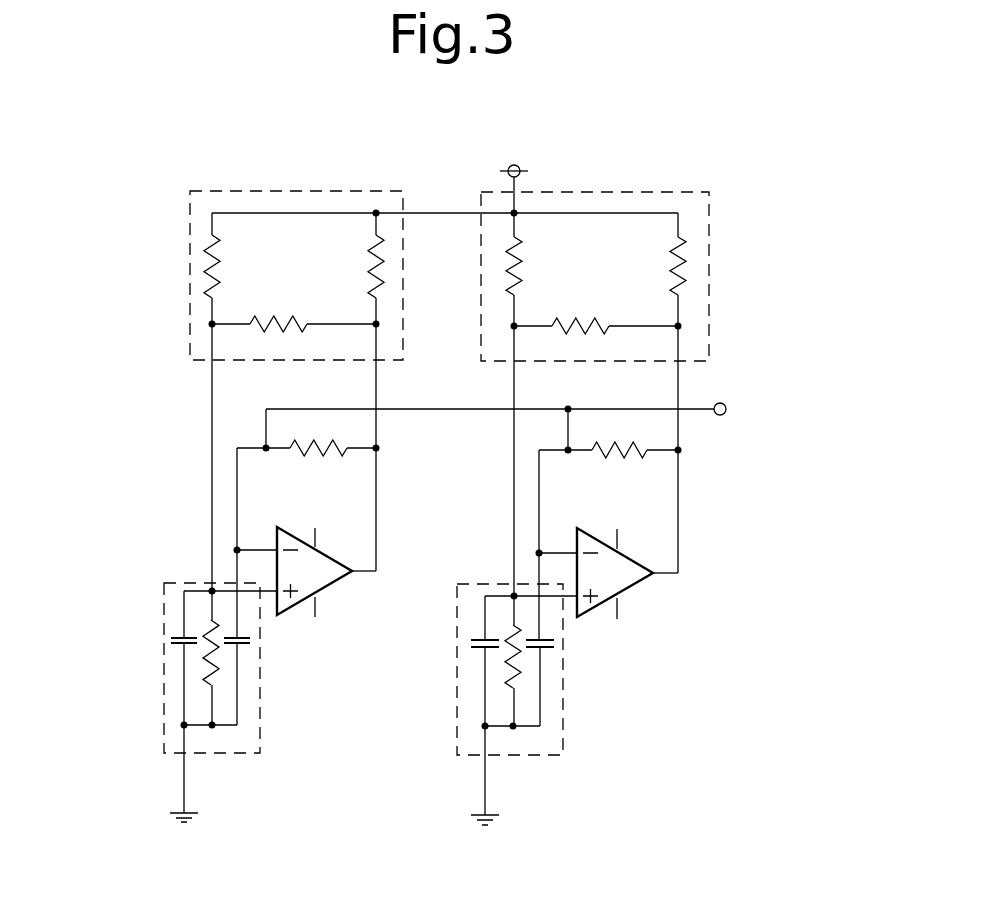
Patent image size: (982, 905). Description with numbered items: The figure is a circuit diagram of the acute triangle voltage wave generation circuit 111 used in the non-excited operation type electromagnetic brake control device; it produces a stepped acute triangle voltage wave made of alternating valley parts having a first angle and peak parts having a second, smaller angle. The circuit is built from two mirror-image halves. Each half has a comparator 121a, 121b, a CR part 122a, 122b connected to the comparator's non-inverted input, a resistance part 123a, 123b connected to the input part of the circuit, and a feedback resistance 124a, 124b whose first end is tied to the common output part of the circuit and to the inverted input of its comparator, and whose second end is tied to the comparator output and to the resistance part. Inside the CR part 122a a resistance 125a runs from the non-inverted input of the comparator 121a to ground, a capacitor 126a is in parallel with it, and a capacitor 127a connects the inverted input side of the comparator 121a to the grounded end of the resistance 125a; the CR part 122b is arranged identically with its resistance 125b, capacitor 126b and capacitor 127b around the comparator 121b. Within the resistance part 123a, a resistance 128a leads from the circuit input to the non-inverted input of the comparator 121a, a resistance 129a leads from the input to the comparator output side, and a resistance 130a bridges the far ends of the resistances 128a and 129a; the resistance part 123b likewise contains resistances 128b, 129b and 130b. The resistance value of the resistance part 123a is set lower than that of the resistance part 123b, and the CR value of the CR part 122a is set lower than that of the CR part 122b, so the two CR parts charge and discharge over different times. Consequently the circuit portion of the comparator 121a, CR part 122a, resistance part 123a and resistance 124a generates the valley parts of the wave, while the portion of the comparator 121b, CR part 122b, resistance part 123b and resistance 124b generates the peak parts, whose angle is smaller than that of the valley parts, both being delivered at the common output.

The acute triangle voltage wave generation circuit 111 is at (643, 157).
The comparator 121a is at (635, 587).
The comparator 121b is at (333, 585).
The CR part 122a is at (543, 758).
The CR part 122b is at (240, 757).
The resistance part 123a is at (710, 215).
The resistance part 123b is at (190, 211).
The resistance 124a is at (613, 459).
The resistance 124b is at (313, 457).
The resistance 125a is at (522, 660).
The resistance 125b is at (198, 668).
The capacitor 126a is at (467, 645).
The capacitor 126b is at (168, 642).
The capacitor 127a is at (557, 642).
The capacitor 127b is at (255, 641).
The resistance 128a is at (506, 260).
The resistance 128b is at (206, 260).
The resistance 129a is at (687, 273).
The resistance 129b is at (385, 270).
The resistance 130a is at (602, 290).
The resistance 130b is at (303, 290).